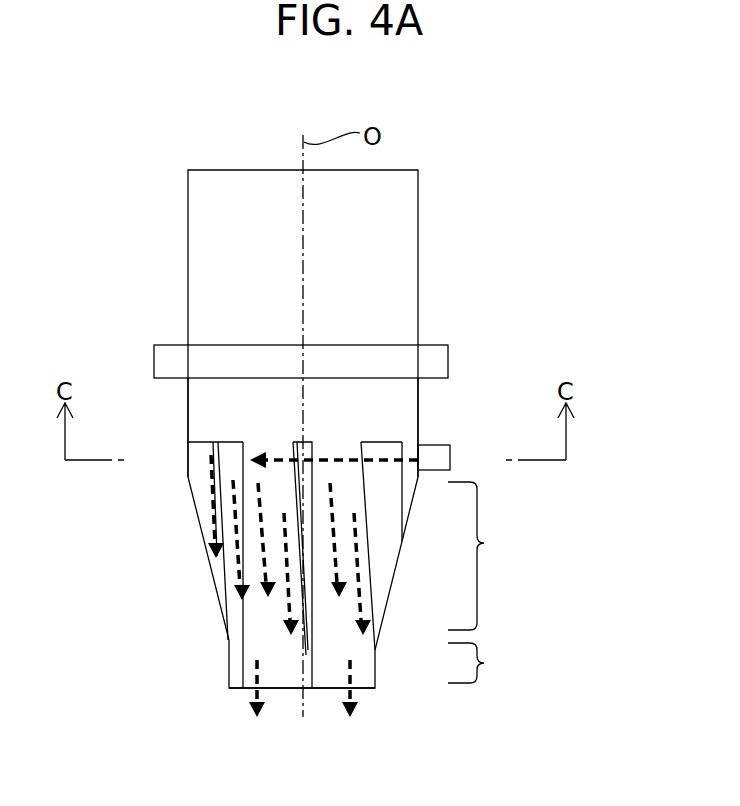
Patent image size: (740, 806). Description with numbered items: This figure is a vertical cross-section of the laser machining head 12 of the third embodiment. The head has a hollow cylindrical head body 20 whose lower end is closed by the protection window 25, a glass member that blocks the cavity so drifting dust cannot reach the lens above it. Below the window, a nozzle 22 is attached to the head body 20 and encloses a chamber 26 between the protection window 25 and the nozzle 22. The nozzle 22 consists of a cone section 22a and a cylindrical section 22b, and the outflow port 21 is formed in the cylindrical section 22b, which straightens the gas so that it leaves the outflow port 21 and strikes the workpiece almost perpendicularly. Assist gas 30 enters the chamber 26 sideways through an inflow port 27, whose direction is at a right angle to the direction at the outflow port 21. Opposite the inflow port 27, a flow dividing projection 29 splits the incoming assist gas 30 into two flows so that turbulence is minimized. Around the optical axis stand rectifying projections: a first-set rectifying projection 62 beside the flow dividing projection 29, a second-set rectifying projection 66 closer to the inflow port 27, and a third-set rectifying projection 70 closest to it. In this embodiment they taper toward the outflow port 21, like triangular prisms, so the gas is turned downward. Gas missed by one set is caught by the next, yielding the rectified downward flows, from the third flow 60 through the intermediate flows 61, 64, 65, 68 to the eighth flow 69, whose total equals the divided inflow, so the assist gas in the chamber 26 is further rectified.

The laser machining head 12 is at (532, 132).
The head body 20 is at (418, 198).
The outflow port 21 is at (364, 690).
The nozzle 22 is at (377, 663).
The cone section 22a is at (491, 556).
The cylindrical section 22b is at (492, 663).
The protection window 25 is at (436, 352).
The chamber 26 is at (200, 412).
The inflow port 27 is at (441, 446).
The flow dividing projection 29 is at (198, 468).
The assist gas 30 is at (332, 456).
The third flow 60 is at (208, 488).
The partition wall 61 is at (245, 562).
The first set of rectifying projections 62 is at (232, 448).
The second flow 64 is at (287, 597).
The merged flow 65 is at (253, 625).
The second set of rectifying projections 66 is at (298, 436).
The third flow 68 is at (333, 502).
The eighth flow 69 is at (358, 548).
The third set of rectifying projections 70 is at (386, 445).